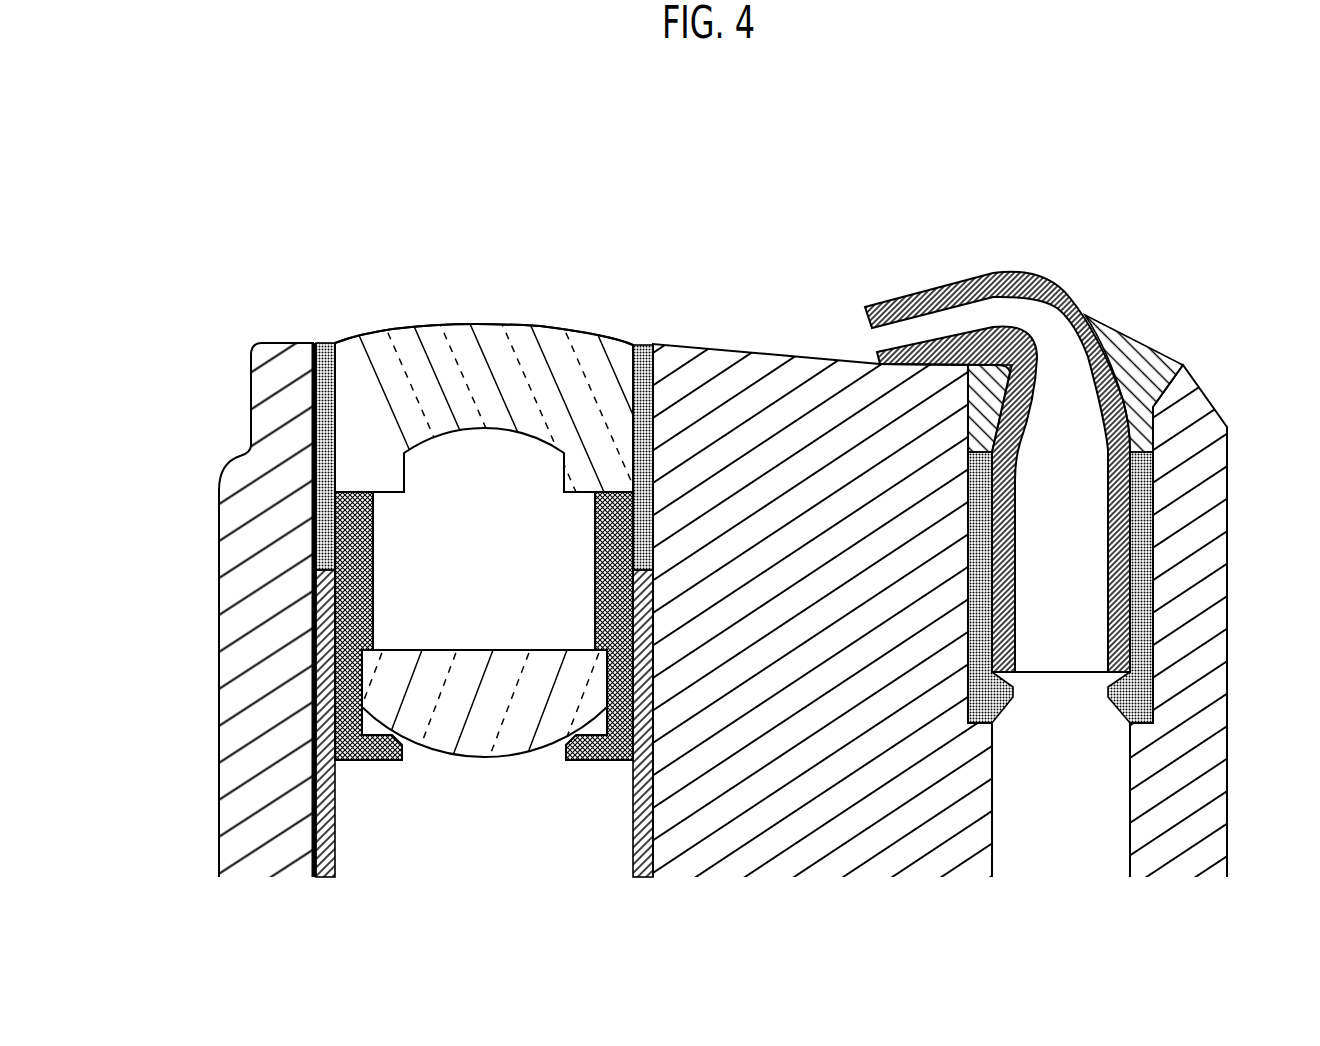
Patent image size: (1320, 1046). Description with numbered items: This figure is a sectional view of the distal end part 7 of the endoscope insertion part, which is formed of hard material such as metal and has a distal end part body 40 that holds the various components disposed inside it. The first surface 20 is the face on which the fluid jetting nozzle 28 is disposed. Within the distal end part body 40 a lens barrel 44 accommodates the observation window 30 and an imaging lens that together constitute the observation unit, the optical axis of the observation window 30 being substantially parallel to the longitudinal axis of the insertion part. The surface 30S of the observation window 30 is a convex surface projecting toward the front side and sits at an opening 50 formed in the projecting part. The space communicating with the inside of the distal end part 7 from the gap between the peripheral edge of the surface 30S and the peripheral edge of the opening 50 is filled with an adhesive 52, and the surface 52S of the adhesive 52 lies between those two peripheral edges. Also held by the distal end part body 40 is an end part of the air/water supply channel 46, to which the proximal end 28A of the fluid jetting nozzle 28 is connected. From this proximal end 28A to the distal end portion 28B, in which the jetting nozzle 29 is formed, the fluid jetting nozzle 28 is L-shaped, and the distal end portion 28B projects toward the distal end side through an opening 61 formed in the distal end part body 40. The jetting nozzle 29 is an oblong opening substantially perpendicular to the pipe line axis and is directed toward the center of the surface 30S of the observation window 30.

The distal end part 7 is at (235, 178).
The first surface 20 is at (430, 212).
The fluid jetting nozzle 28 is at (996, 436).
The proximal end 28A is at (1085, 541).
The distal end portion 28B is at (990, 261).
The jetting nozzle 29 is at (875, 352).
The observation window 30 is at (432, 338).
The surface of the observation window 30S is at (488, 328).
The distal end part body 40 is at (268, 870).
The lens barrel 44 is at (316, 600).
The air/water supply channel 46 is at (1075, 806).
The opening 50 is at (313, 342).
The adhesive 52 is at (332, 529).
The surface of the adhesive 52S is at (334, 343).
The opening 61 is at (1158, 372).